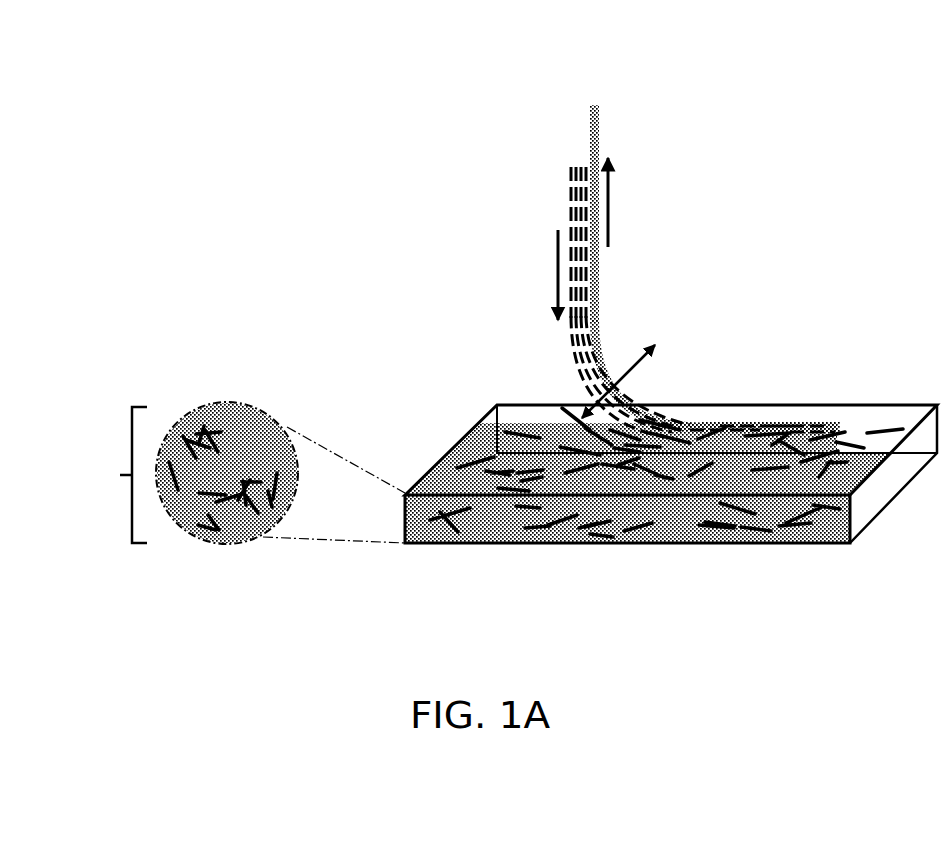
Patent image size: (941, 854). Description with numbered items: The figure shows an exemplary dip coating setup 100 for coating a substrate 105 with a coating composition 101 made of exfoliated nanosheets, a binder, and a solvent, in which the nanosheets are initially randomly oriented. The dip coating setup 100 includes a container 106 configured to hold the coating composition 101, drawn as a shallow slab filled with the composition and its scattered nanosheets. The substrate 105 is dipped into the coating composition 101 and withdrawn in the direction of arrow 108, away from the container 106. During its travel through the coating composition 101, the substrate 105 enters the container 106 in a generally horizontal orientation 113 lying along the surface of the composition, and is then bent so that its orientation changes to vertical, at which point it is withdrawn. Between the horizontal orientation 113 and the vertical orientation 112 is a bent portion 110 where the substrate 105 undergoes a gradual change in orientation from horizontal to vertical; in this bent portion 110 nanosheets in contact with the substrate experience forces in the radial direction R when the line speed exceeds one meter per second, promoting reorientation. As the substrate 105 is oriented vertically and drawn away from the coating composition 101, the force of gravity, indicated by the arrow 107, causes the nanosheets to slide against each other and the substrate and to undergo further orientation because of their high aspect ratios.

The dip coating setup 100 is at (262, 129).
The coating composition 101 is at (188, 475).
The substrate 105 is at (712, 430).
The container 106 is at (440, 458).
The arrow indicating force of gravity 107 is at (555, 250).
The arrow indicating withdrawal direction 108 is at (608, 215).
The bent portion 110 is at (697, 420).
The vertical orientation 112 is at (600, 122).
The horizontal orientation 113 is at (770, 430).